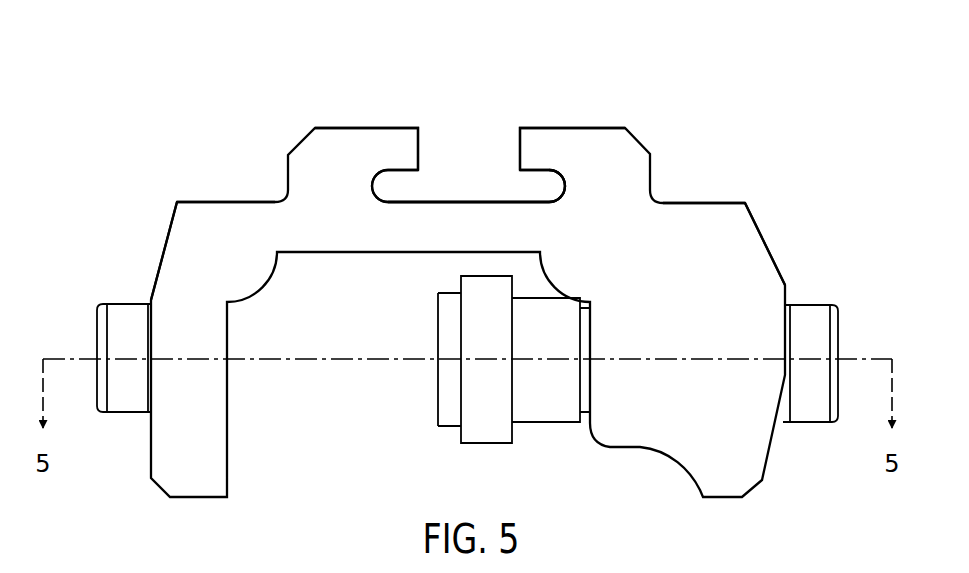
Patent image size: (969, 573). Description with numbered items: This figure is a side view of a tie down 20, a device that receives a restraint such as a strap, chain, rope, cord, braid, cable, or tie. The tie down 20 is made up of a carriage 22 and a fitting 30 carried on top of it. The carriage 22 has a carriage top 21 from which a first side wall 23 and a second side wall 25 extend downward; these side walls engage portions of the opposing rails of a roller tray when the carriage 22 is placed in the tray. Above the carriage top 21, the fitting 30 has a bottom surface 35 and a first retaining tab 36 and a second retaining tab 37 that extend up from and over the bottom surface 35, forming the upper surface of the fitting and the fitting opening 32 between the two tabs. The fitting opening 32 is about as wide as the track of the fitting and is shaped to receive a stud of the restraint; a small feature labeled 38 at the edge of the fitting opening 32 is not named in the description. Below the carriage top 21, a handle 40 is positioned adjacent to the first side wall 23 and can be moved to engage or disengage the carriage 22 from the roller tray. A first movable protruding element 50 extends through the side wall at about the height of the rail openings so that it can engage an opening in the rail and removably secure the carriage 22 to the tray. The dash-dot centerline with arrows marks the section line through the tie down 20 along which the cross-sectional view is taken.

The tie down 20 is at (202, 33).
The fitting 30 is at (670, 100).
The carriage top 21 is at (236, 201).
The carriage 22 is at (660, 222).
The first side wall 23 is at (757, 266).
The second side wall 25 is at (181, 238).
The fitting opening 32 is at (474, 131).
The bottom surface 35 is at (448, 201).
The first retaining tab 36 is at (540, 138).
The second retaining tab 37 is at (375, 141).
The slot edge 38 is at (545, 170).
The handle 40 is at (489, 437).
The first movable protruding element 50 is at (818, 408).